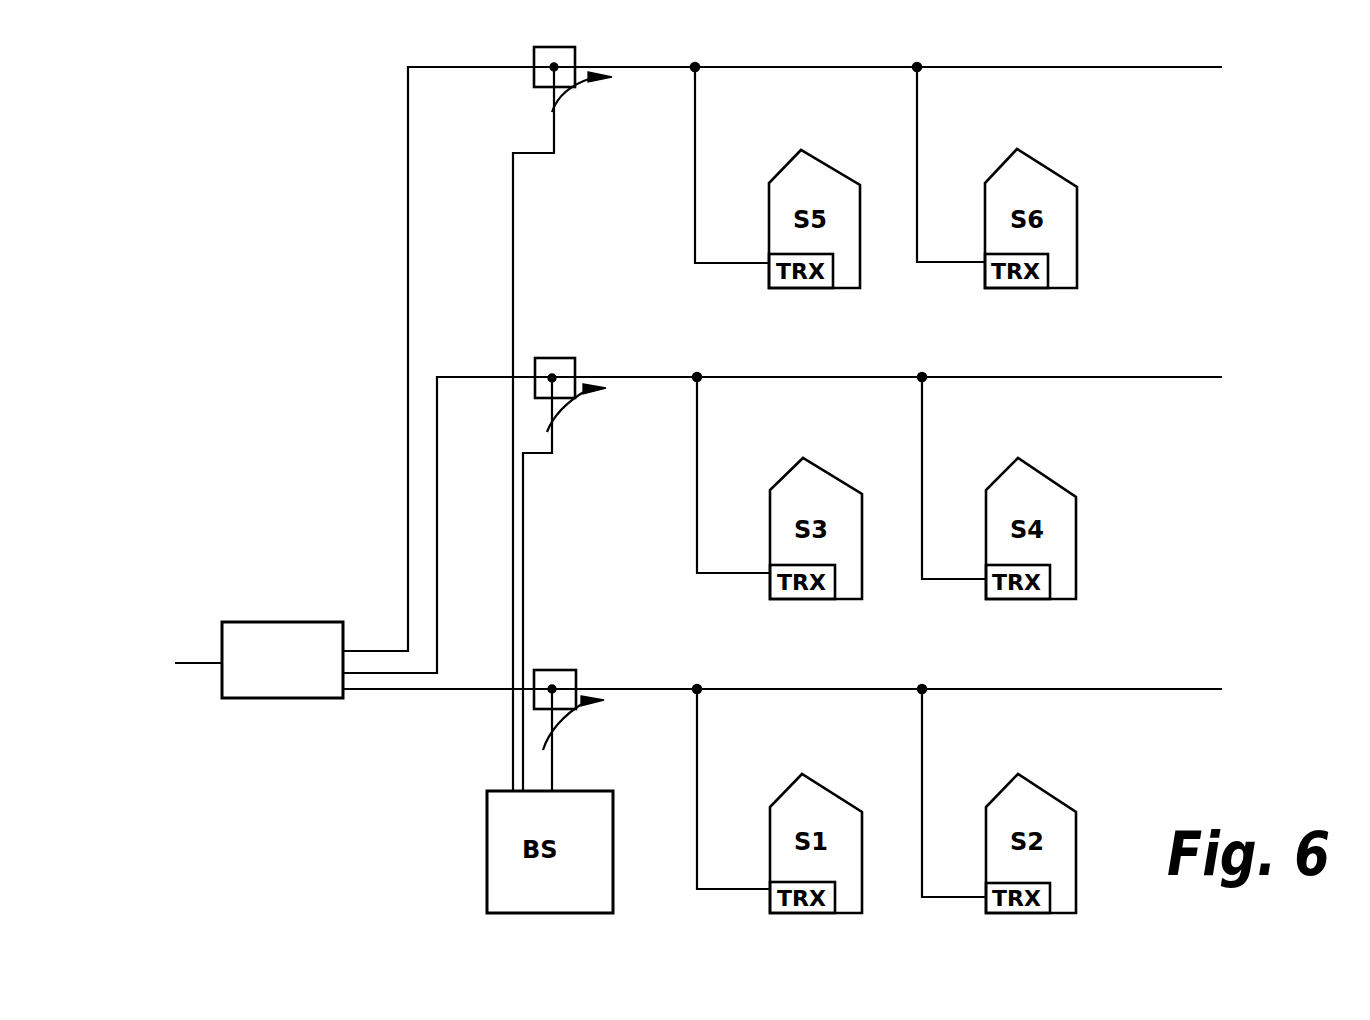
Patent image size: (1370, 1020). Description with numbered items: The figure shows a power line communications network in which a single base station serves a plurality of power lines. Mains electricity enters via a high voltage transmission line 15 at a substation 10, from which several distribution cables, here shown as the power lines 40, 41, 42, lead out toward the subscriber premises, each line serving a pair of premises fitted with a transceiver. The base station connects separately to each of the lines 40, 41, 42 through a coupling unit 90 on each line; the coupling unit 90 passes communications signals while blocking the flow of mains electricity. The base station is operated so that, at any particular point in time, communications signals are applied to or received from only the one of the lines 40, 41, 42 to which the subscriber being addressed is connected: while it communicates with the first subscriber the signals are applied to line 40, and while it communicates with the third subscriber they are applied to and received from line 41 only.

The substation 10 is at (291, 678).
The transmission line 15 is at (196, 663).
The distribution cable 40 is at (378, 690).
The distribution cable 41 is at (439, 630).
The power line 42 is at (407, 586).
The coupling unit 90 is at (565, 59).